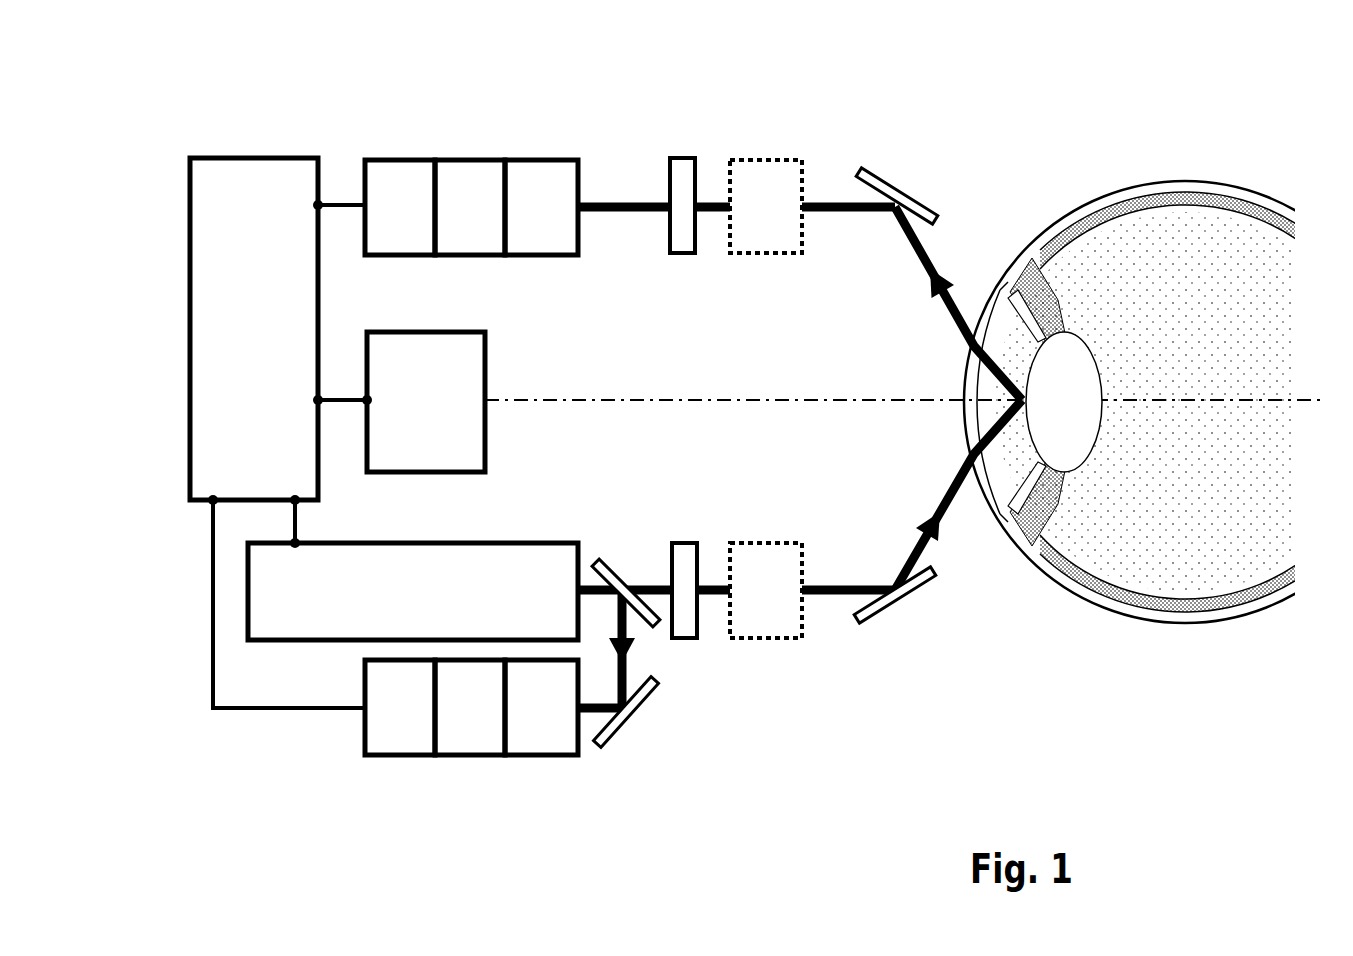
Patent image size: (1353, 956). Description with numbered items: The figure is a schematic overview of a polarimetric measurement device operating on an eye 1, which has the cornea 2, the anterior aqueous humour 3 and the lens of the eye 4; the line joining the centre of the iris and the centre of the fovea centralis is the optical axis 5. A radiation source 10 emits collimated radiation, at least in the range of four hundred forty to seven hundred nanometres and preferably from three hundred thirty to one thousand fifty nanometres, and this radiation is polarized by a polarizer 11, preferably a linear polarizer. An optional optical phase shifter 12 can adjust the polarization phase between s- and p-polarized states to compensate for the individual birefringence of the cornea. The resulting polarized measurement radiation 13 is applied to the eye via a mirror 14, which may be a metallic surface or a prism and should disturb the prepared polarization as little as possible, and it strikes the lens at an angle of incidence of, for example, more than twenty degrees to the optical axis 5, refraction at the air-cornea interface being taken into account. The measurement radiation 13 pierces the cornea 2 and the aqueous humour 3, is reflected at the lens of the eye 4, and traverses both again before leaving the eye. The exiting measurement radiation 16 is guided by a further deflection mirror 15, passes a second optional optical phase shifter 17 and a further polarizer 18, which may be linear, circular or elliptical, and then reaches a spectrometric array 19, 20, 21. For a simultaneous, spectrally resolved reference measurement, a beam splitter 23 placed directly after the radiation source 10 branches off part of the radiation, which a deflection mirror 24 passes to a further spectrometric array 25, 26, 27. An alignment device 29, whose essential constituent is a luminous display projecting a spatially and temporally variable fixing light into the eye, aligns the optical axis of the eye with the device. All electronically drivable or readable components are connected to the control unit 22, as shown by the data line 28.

The eye 1 is at (1094, 489).
The cornea 2 is at (1009, 488).
The anterior aqueous humour 3 is at (990, 388).
The lens of the eye 4 is at (1083, 376).
The optical axis 5 is at (1312, 400).
The radiation source 10 is at (530, 543).
The polarizer 11 is at (683, 640).
The optical phase shifter 12 is at (767, 640).
The polarized measurement radiation 13 is at (826, 592).
The mirror 14 is at (903, 612).
The deflection mirror 15 is at (895, 190).
The measurement radiation leaving the eye 16 is at (826, 207).
The optical phase shifter 17 is at (767, 160).
The further polarizer 18 is at (683, 158).
The spectrometric array component 19 is at (533, 160).
The spectrometric array component 20 is at (467, 160).
The spectrometric array component 21 is at (413, 160).
The control unit 22 is at (262, 158).
The beam splitter 23 is at (618, 550).
The deflection mirror 24 is at (642, 740).
The further spectrometric array component 25 is at (533, 757).
The further spectrometric array component 26 is at (467, 757).
The further spectrometric array component 27 is at (413, 757).
The data line 28 is at (240, 708).
The alignment device 29 is at (485, 357).